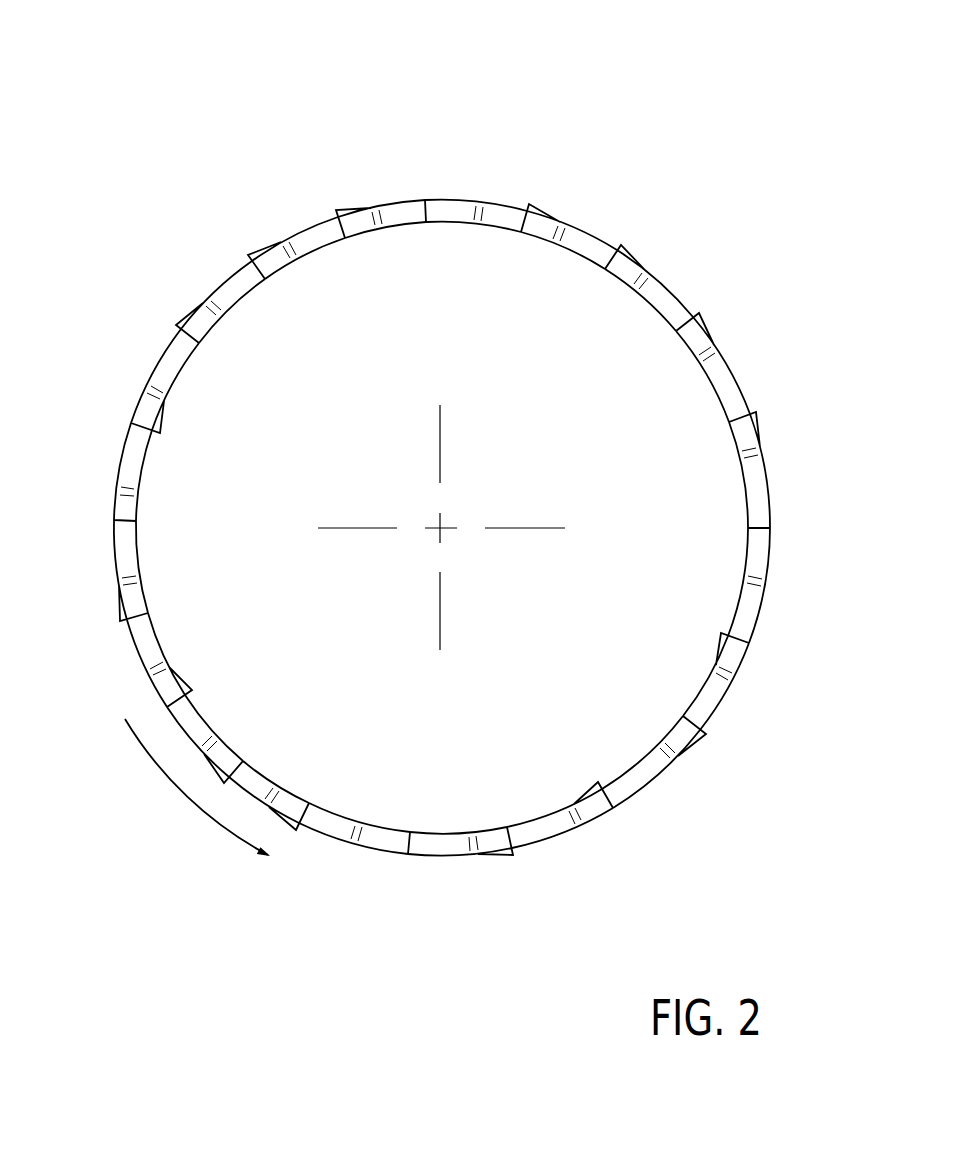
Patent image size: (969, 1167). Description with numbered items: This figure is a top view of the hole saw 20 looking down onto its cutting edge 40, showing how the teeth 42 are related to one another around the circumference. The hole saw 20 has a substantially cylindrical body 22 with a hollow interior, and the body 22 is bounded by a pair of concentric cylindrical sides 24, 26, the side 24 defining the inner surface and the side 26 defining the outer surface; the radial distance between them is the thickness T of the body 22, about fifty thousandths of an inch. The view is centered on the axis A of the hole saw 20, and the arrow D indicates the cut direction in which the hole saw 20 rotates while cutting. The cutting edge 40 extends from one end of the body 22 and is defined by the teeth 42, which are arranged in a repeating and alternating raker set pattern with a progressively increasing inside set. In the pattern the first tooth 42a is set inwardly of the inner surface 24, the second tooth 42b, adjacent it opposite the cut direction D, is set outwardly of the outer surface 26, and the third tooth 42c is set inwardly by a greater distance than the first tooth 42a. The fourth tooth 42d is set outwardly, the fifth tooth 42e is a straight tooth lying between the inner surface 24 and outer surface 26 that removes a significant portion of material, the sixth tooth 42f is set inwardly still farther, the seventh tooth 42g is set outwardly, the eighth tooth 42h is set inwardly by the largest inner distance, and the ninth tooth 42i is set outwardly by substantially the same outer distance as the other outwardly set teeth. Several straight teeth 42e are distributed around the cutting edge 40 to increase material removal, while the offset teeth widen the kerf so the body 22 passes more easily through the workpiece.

The hole saw 20 is at (741, 101).
The body 22 is at (771, 568).
The side 24 is at (745, 462).
The side 26 is at (768, 452).
The cutting edge 40 is at (742, 386).
The teeth 42 is at (546, 213).
The first tooth 42a is at (290, 792).
The second tooth 42b is at (222, 758).
The third tooth 42c is at (167, 680).
The fourth tooth 42d is at (130, 590).
The fifth tooth 42e is at (455, 216).
The sixth tooth 42f is at (145, 410).
The seventh tooth 42g is at (193, 330).
The eighth tooth 42h is at (266, 262).
The ninth tooth 42i is at (362, 232).
The central axis A is at (440, 528).
The cut direction D is at (159, 767).
The thickness T is at (598, 700).